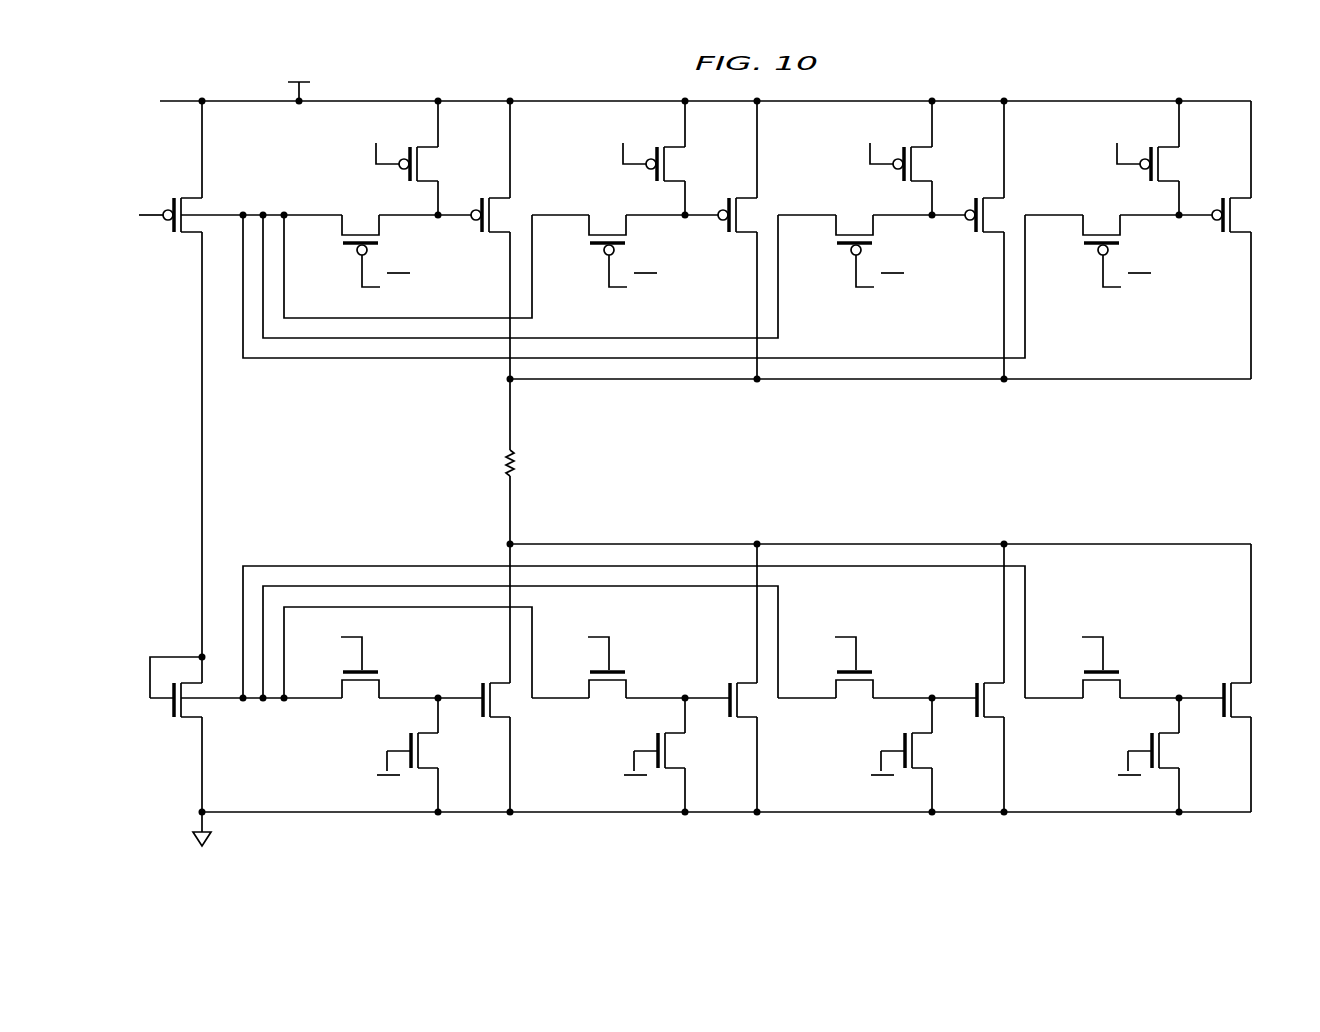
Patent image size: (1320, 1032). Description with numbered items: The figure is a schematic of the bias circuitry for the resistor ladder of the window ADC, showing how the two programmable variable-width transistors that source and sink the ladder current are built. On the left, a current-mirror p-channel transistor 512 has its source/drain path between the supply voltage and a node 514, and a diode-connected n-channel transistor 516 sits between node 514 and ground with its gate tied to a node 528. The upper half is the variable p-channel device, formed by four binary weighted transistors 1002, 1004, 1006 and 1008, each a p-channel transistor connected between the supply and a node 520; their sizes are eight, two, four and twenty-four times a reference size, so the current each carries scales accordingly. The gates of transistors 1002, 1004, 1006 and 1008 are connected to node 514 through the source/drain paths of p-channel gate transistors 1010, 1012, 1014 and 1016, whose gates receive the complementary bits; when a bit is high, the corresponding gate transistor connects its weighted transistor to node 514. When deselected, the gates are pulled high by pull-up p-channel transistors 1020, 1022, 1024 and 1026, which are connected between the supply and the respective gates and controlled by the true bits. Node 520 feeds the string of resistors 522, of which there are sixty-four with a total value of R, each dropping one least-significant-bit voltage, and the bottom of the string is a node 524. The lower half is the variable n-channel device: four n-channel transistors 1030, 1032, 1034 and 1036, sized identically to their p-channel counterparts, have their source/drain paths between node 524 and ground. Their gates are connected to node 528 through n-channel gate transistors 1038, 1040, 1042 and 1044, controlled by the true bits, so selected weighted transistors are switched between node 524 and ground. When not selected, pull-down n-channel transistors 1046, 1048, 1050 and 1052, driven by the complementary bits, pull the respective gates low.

The p-channel transistor 512 is at (168, 207).
The node 514 is at (222, 213).
The n-channel transistor 516 is at (172, 710).
The node 520 is at (515, 383).
The resistor 522 is at (502, 460).
The node 524 is at (515, 543).
The node 528 is at (222, 700).
The binary weighted transistor 1002 is at (480, 224).
The binary weighted transistor 1004 is at (727, 224).
The binary weighted transistor 1006 is at (974, 224).
The binary weighted transistor 1008 is at (1221, 224).
The p-channel transistor 1010 is at (350, 247).
The p-channel transistor 1012 is at (597, 247).
The p-channel transistor 1014 is at (844, 247).
The p-channel transistor 1016 is at (1091, 247).
The pull-up p-channel transistor 1020 is at (407, 173).
The pull-up p-channel transistor 1022 is at (654, 173).
The pull-up p-channel transistor 1024 is at (901, 173).
The pull-up p-channel transistor 1026 is at (1148, 173).
The n-channel transistor 1030 is at (480, 688).
The n-channel transistor 1032 is at (727, 688).
The n-channel transistor 1034 is at (974, 688).
The n-channel transistor 1036 is at (1221, 688).
The n-channel transistor 1038 is at (372, 669).
The n-channel gate transistor 1040 is at (619, 669).
The n-channel gate transistor 1042 is at (866, 669).
The n-channel gate transistor 1044 is at (1113, 669).
The pull-down n-channel transistor 1046 is at (408, 739).
The pull-down n-channel transistor 1048 is at (655, 739).
The pull-down n-channel transistor 1050 is at (902, 739).
The pull-down n-channel transistor 1052 is at (1149, 739).